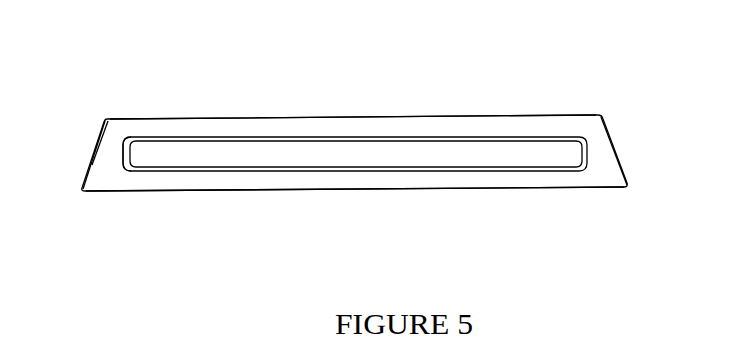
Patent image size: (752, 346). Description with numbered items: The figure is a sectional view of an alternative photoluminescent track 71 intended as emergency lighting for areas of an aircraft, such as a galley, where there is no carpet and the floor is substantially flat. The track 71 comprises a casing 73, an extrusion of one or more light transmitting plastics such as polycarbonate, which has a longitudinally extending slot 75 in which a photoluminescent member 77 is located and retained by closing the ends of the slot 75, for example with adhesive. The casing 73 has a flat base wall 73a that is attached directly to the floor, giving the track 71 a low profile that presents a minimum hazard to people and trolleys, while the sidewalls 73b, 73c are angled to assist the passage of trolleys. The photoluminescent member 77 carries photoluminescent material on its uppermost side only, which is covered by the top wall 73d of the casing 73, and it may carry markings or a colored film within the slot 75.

The photoluminescent track 71 is at (477, 91).
The casing 73 is at (215, 122).
The flat base wall 73a is at (450, 192).
The sidewall 73b is at (92, 157).
The sidewall 73c is at (617, 147).
The top wall 73d is at (355, 118).
The longitudinally extending slot 75 is at (138, 173).
The photoluminescent member 77 is at (348, 153).